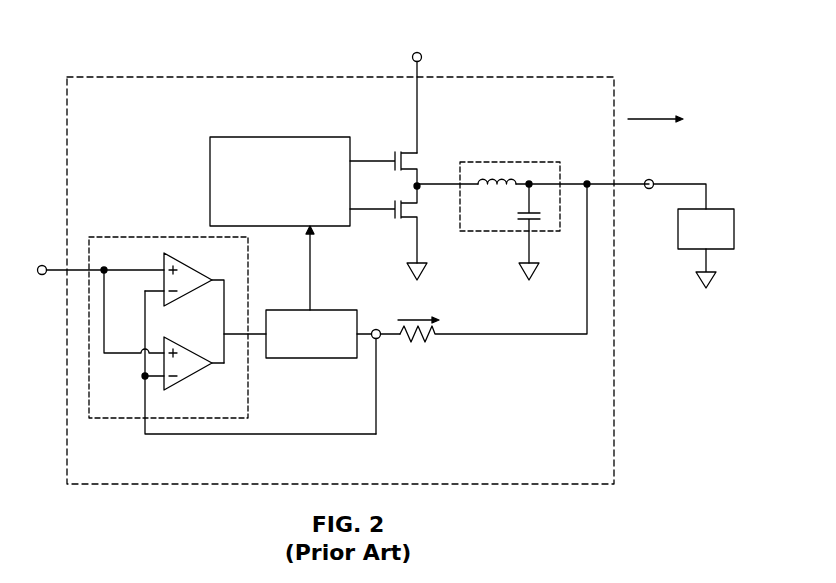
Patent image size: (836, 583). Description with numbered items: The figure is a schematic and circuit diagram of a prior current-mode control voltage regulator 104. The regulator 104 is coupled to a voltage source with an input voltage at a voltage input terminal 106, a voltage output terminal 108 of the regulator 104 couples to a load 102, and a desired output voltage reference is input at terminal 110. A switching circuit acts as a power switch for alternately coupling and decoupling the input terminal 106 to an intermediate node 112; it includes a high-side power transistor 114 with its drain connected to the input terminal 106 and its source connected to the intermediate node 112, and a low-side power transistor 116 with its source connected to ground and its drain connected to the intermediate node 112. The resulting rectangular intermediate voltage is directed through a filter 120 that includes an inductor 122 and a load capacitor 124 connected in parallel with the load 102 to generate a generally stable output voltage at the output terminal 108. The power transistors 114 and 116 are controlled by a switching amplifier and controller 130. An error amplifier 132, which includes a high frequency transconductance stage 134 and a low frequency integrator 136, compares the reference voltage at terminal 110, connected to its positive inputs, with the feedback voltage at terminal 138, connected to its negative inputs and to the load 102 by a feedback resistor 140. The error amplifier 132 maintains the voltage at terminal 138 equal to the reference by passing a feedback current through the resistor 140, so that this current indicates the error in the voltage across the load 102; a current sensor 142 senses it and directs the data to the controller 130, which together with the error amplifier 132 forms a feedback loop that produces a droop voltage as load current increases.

The load 102 is at (689, 252).
The voltage regulator 104 is at (535, 77).
The voltage input terminal 106 is at (421, 55).
The voltage output terminal 108 is at (648, 189).
The terminal 110 is at (41, 275).
The intermediate node 112 is at (419, 188).
The high-side power transistor 114 is at (394, 151).
The low-side power transistor 116 is at (399, 221).
The filter 120 is at (545, 162).
The inductor 122 is at (500, 179).
The load capacitor 124 is at (519, 212).
The switching amplifier and controller 130 is at (263, 137).
The error amplifier 132 is at (140, 237).
The high frequency transconductance stage 134 is at (187, 381).
The low frequency integrator 136 is at (188, 264).
The terminal 138 is at (375, 329).
The feedback resistor 140 is at (436, 336).
The current sensor 142 is at (312, 358).